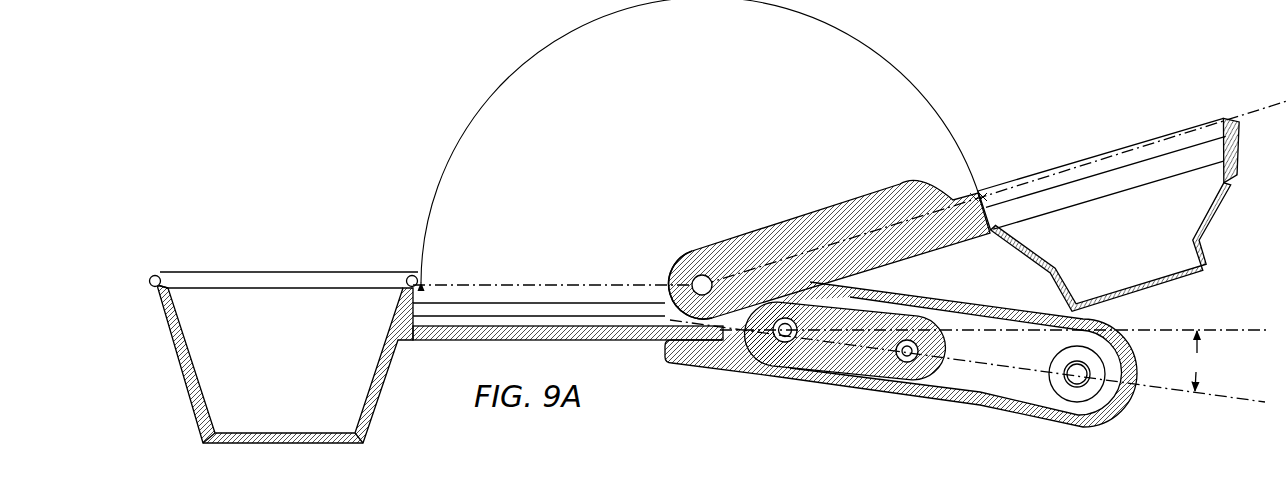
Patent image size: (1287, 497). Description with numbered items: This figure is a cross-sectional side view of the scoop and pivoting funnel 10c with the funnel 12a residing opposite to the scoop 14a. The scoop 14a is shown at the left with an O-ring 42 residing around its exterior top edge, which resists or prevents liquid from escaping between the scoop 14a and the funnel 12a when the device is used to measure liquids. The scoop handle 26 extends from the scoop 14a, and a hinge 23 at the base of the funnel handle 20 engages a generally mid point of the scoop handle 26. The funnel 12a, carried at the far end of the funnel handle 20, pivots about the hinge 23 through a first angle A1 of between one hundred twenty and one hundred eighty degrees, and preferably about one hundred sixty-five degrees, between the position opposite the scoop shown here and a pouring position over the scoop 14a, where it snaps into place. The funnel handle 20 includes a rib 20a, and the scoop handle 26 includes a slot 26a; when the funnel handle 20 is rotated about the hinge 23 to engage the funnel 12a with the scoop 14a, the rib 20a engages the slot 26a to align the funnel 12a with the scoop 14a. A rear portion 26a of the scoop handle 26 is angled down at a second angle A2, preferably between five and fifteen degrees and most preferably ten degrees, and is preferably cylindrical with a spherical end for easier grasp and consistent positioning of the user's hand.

The scoop and pivoting funnel 10c is at (440, 185).
The funnel 12a is at (1227, 180).
The scoop 14a is at (190, 373).
The funnel handle 20 is at (823, 230).
The rib 20a is at (748, 237).
The hinge 23 is at (697, 284).
The scoop handle 26 is at (510, 330).
The slot 26a is at (577, 302).
The O-ring 42 is at (150, 279).
The first angle A1 is at (954, 150).
The second angle A2 is at (1203, 361).